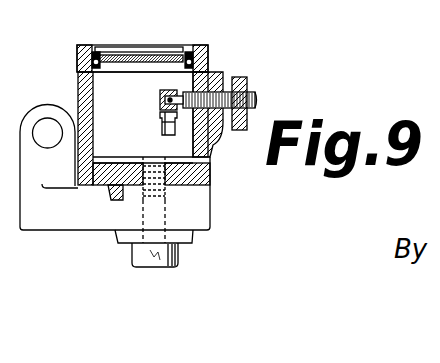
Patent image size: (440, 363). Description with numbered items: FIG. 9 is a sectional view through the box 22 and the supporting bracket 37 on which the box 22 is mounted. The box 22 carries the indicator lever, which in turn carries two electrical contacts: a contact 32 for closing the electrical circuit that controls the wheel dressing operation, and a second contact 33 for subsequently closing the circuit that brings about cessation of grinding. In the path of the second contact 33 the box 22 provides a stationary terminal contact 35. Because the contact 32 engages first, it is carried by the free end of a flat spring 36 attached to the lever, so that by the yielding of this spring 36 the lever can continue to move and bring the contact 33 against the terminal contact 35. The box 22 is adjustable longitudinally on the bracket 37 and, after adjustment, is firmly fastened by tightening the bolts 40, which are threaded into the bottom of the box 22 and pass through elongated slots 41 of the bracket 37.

The box 22 is at (82, 82).
The contact 32 is at (212, 142).
The second contact 33 is at (180, 98).
The stationary terminal contact 35 is at (250, 92).
The flat spring 36 is at (178, 125).
The supporting bracket 37 is at (58, 222).
The bolt 40 is at (177, 260).
The elongated slot 41 is at (167, 218).